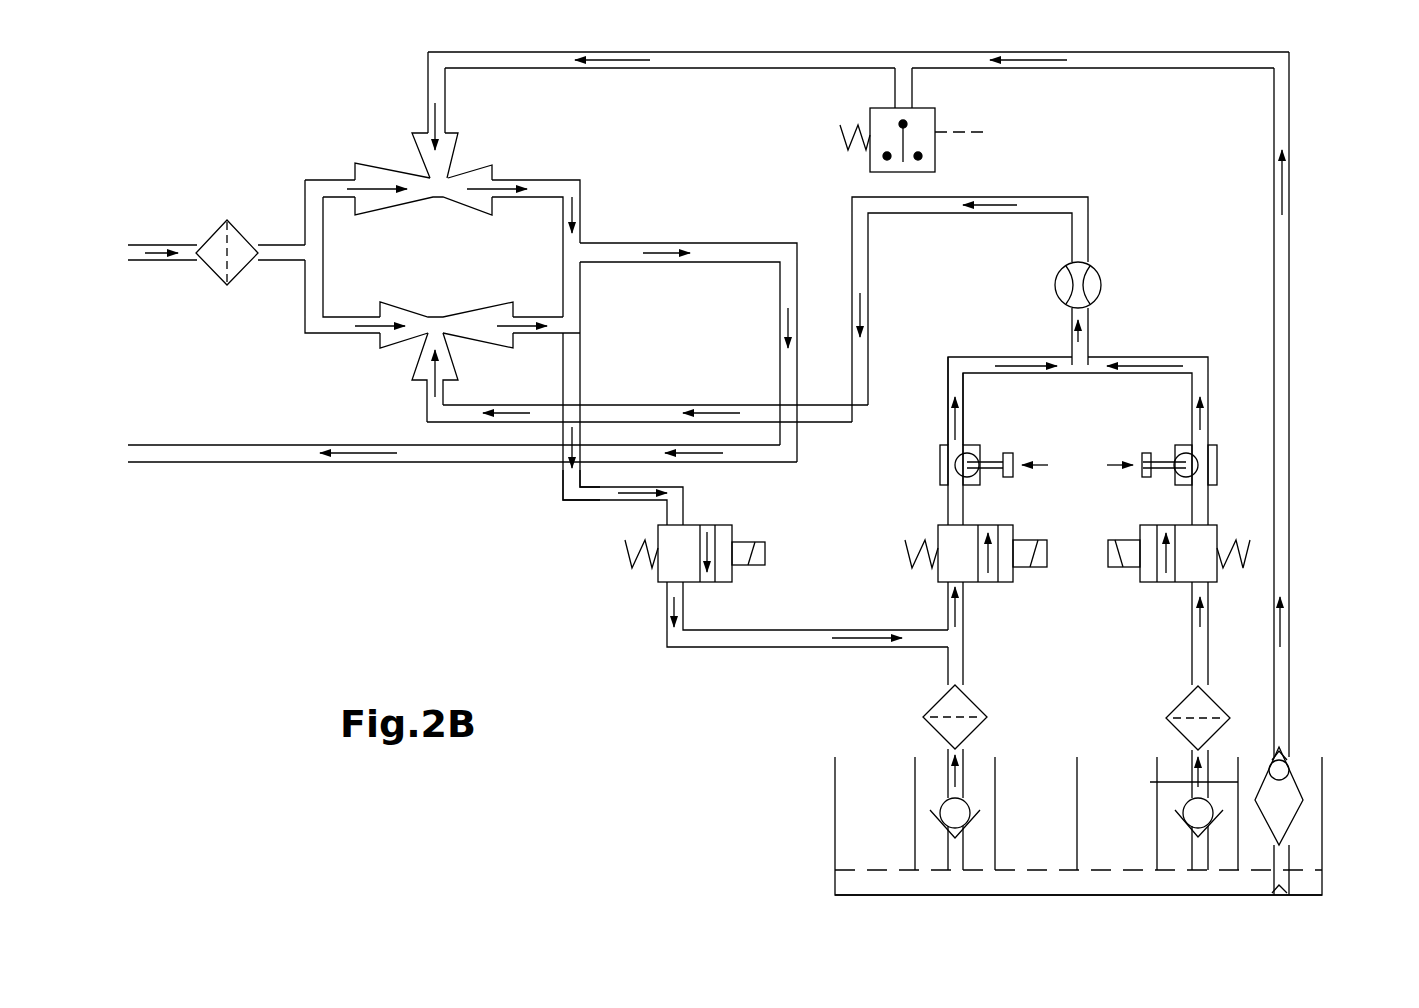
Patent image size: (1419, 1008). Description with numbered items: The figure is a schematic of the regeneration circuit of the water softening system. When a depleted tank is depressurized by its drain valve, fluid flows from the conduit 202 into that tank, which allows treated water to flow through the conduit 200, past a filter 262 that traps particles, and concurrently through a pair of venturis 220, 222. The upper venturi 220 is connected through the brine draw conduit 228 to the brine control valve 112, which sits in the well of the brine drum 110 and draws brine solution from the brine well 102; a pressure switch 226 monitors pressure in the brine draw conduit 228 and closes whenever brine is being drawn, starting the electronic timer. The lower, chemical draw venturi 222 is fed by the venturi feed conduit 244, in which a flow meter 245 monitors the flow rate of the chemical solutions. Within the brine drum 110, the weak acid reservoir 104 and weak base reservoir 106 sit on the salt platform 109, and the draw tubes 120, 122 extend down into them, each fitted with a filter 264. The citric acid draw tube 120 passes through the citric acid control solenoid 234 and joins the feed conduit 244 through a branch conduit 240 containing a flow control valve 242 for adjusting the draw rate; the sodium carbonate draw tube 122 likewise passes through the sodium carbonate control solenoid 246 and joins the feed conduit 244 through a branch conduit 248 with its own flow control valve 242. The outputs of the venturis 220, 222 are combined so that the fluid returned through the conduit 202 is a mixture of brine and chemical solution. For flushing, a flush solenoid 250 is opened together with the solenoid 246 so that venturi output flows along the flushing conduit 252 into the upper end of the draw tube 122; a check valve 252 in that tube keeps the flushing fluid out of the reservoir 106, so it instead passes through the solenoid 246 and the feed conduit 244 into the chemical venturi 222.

The conduit 200 is at (153, 243).
The filter 262 is at (212, 263).
The venturi 220 is at (460, 178).
The chemical draw venturi 222 is at (460, 317).
The conduit 202 is at (182, 455).
The flushing conduit / check valve 252 is at (588, 498).
The flush solenoid 250 is at (658, 582).
The pressure switch 226 is at (923, 120).
The brine draw conduit 228 is at (1090, 68).
The venturi feed conduit 244 is at (1057, 203).
The flow meter 245 is at (1093, 290).
The branch conduit 240 is at (1133, 338).
The branch conduit 248 is at (962, 388).
The flow control valve 242 is at (973, 452).
The sodium carbonate control solenoid 246 is at (1008, 582).
The citric acid control solenoid 234 is at (1150, 582).
The filter 264 is at (967, 708).
The sodium carbonate draw tube 122 is at (963, 748).
The citric acid draw tube 120 is at (1188, 753).
The weak base regeneration solution reservoir 106 is at (993, 780).
The weak acid regeneration solution reservoir 104 is at (1152, 782).
The brine drum 110 is at (810, 792).
The salt platform 109 is at (870, 868).
The brine well 102 is at (853, 883).
The brine control valve 112 is at (1290, 773).